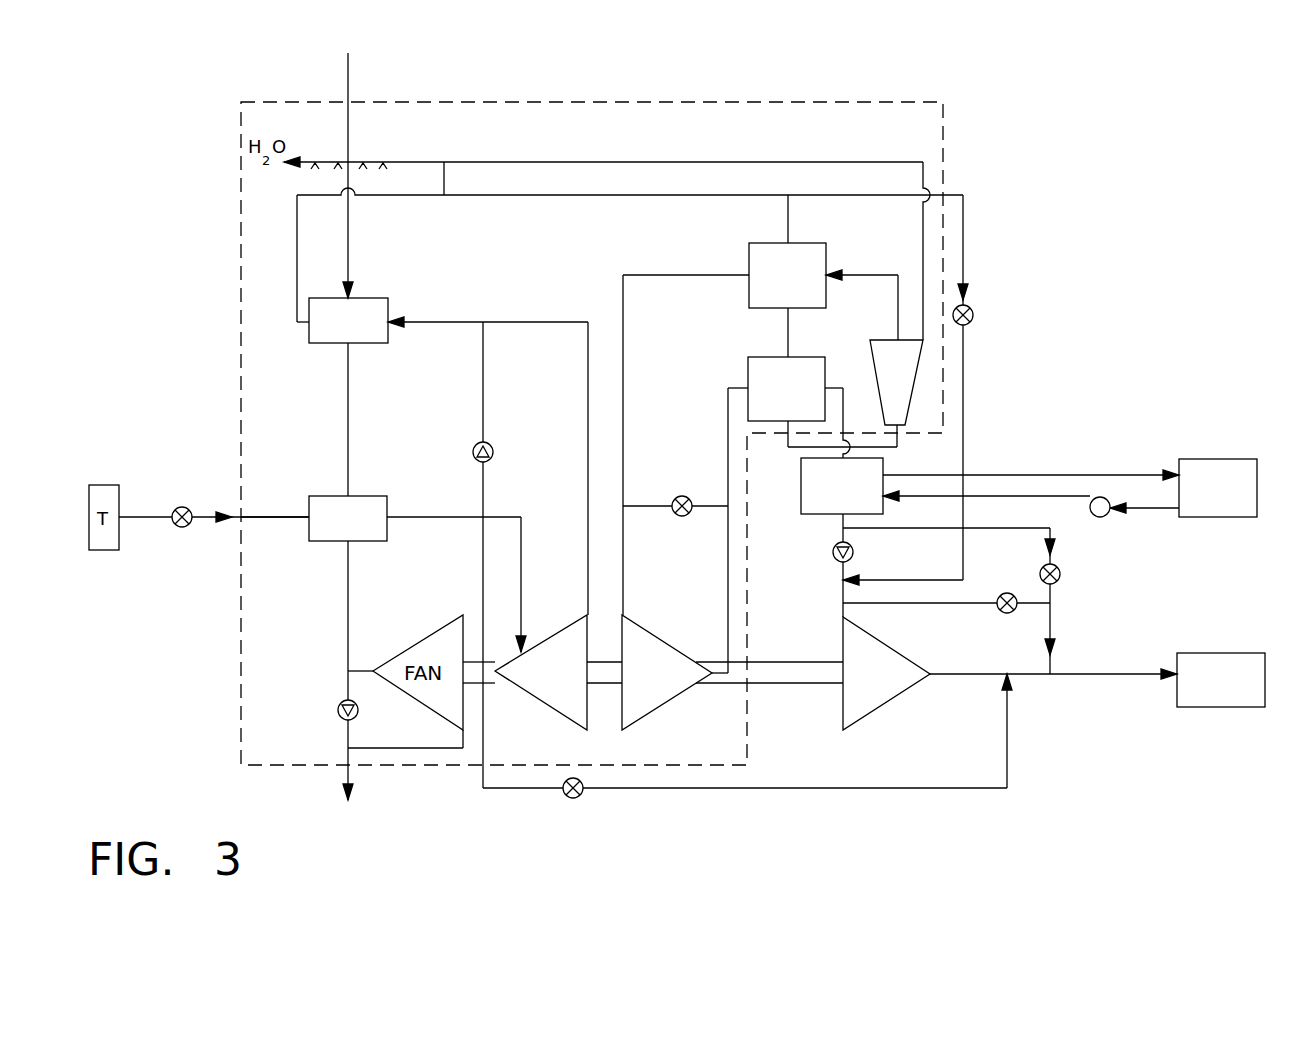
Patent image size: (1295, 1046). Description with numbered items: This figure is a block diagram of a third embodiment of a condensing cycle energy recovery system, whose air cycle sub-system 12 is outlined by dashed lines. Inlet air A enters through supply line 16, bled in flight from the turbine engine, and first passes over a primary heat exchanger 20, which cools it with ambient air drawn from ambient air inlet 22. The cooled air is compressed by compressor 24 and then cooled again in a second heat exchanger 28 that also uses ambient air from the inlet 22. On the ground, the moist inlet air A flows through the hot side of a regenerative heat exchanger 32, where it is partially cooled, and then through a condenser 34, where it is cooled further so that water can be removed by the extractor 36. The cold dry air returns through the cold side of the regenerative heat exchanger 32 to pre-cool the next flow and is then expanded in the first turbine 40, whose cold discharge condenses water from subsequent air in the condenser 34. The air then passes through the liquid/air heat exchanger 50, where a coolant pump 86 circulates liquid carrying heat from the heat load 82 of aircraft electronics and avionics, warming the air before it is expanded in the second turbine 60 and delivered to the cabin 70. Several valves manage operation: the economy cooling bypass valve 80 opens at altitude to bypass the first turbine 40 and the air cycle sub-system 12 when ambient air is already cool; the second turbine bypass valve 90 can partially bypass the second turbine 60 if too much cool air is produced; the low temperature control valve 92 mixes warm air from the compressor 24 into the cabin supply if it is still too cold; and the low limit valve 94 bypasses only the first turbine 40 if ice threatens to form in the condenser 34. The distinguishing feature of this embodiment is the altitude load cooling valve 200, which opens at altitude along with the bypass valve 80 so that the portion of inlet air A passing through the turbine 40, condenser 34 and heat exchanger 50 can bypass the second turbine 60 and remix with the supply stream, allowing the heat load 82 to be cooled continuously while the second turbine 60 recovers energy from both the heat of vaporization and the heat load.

The air cycle sub-system 12 is at (742, 100).
The supply line 16 is at (140, 517).
The primary heat exchanger 20 is at (327, 541).
The ambient air inlet 22 is at (352, 80).
The compressor 24 is at (568, 722).
The second heat exchanger 28 is at (327, 343).
The regenerative heat exchanger 32 is at (763, 243).
The condenser 34 is at (763, 357).
The extractor 36 is at (870, 365).
The first turbine 40 is at (642, 720).
The liquid/air heat exchanger 50 is at (820, 514).
The second turbine 60 is at (860, 718).
The cabin 70 is at (1215, 653).
The economy cooling bypass valve 80 is at (975, 315).
The heat load 82 is at (1218, 459).
The coolant pump 86 is at (1104, 518).
The second turbine bypass valve 90 is at (1003, 614).
The low temperature control valve 92 is at (566, 798).
The low limit valve 94 is at (682, 496).
The altitude load cooling valve 200 is at (1062, 574).
The inlet air A is at (257, 517).